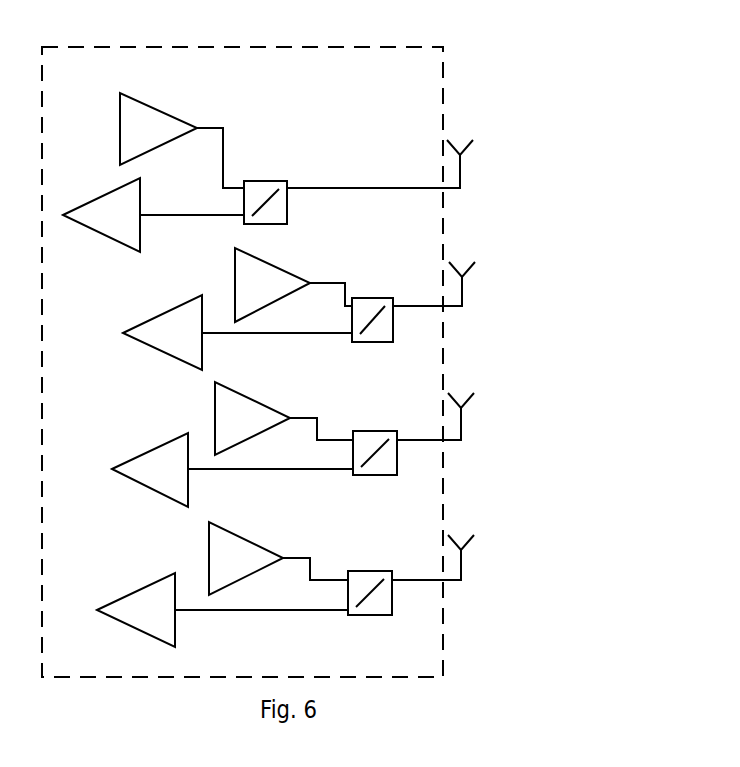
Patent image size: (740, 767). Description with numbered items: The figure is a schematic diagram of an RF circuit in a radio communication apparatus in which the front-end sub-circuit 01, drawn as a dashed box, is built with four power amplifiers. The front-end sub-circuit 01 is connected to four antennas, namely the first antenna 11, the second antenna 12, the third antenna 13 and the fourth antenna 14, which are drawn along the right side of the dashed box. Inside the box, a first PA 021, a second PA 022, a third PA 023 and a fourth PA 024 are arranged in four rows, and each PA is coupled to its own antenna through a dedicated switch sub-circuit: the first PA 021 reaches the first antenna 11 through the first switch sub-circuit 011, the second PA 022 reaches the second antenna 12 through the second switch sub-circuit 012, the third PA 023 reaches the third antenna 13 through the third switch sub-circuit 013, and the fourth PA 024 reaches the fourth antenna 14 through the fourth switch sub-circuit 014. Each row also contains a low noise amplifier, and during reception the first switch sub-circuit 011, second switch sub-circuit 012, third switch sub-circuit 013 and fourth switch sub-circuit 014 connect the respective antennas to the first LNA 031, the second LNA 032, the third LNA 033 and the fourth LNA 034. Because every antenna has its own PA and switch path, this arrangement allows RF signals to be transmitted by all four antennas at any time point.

The front-end sub-circuit 01 is at (443, 53).
The first switch sub-circuit 011 is at (264, 181).
The second switch sub-circuit 012 is at (371, 298).
The third switch sub-circuit 013 is at (375, 431).
The fourth switch sub-circuit 014 is at (370, 571).
The first PA 021 is at (137, 95).
The second PA 022 is at (265, 262).
The third PA 023 is at (248, 398).
The fourth PA 024 is at (242, 538).
The first LNA 031 is at (108, 190).
The second LNA 032 is at (172, 303).
The third LNA 033 is at (152, 445).
The fourth LNA 034 is at (137, 586).
The first antenna 11 is at (477, 127).
The second antenna 12 is at (477, 253).
The third antenna 13 is at (477, 388).
The fourth antenna 14 is at (477, 527).